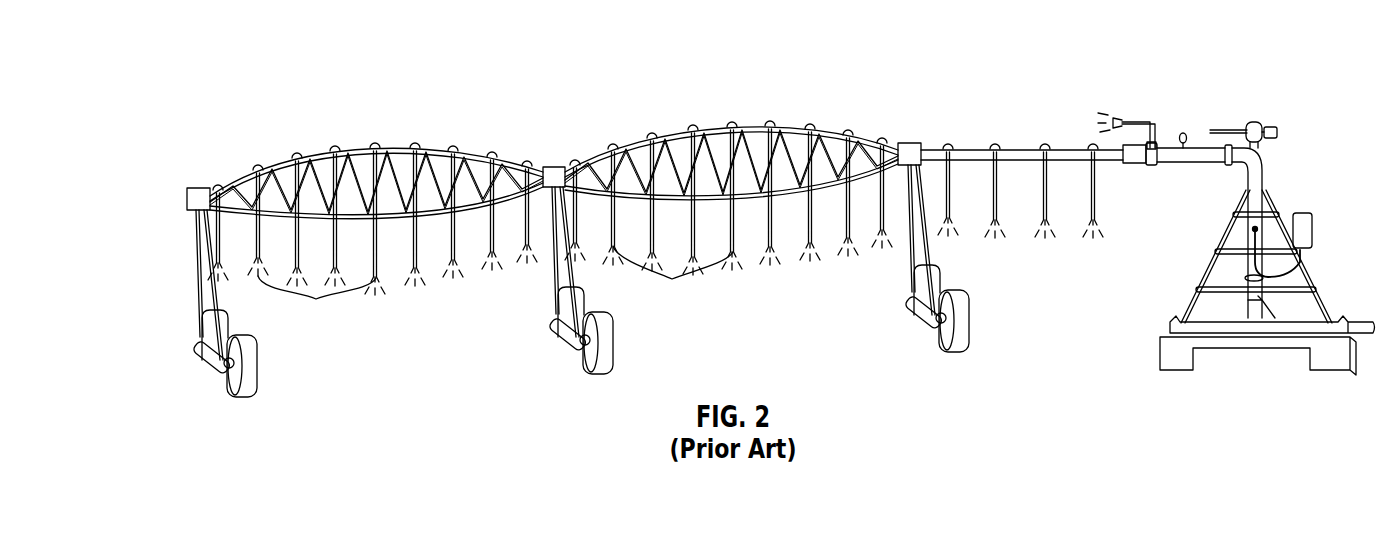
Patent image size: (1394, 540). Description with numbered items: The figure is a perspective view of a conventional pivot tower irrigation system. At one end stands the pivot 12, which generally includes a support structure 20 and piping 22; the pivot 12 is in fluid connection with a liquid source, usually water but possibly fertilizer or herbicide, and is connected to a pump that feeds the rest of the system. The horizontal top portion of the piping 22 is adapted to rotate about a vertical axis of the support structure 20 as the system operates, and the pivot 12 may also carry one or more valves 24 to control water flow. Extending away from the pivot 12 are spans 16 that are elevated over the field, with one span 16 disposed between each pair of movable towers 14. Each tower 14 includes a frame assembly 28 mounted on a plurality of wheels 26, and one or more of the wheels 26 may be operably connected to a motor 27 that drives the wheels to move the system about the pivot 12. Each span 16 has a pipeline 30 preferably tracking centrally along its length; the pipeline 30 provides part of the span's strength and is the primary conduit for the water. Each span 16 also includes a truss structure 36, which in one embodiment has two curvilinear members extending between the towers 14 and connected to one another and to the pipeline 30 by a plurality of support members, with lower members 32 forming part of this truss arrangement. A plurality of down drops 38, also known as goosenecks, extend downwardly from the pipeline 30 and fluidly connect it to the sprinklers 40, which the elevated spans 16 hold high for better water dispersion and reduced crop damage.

The pivot 12 is at (1148, 195).
The tower 14 is at (559, 302).
The span 16 is at (634, 200).
The support structure 20 is at (1316, 302).
The piping 22 is at (1257, 190).
The valve 24 is at (1143, 122).
The wheel 26 is at (229, 353).
The motor 27 is at (229, 363).
The frame assembly 28 is at (212, 357).
The pipeline 30 is at (427, 157).
The truss rod (bottom chord) 32 is at (378, 222).
The truss structure 36 is at (270, 172).
The down drop 38 is at (531, 164).
The sprinkler 40 is at (550, 232).